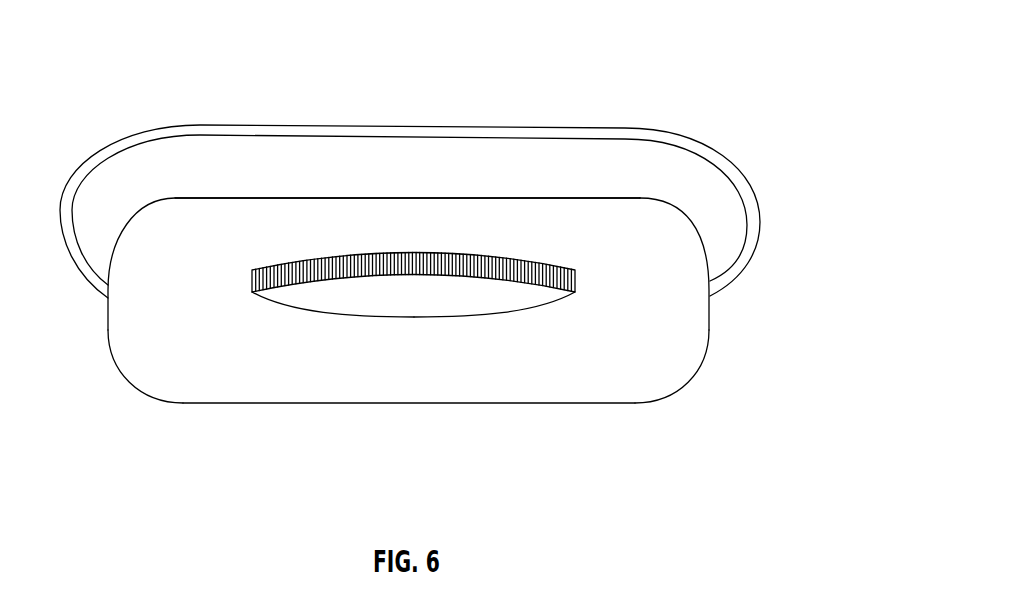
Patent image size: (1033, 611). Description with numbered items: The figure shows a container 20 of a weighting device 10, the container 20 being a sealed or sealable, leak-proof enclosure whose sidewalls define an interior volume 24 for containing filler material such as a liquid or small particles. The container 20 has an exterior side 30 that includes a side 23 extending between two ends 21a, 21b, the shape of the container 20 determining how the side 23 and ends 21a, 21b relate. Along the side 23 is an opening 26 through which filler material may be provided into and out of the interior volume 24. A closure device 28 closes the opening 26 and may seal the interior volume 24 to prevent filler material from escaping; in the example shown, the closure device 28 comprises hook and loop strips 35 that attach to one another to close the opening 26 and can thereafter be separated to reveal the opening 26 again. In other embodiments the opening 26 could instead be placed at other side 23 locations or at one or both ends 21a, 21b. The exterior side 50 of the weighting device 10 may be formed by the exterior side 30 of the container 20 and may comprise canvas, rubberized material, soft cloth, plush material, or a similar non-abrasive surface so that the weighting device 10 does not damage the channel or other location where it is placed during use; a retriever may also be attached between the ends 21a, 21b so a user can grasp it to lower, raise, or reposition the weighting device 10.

The weighting device 10 is at (593, 83).
The container 20 is at (621, 198).
The end 21a is at (145, 392).
The end 21b is at (710, 302).
The side 23 is at (637, 338).
The interior volume 24 is at (402, 298).
The opening 26 is at (537, 311).
The closure device 28 is at (287, 306).
The exterior side 30 is at (687, 326).
The hook and loop strips 35 is at (551, 263).
The exterior side 50 is at (495, 223).